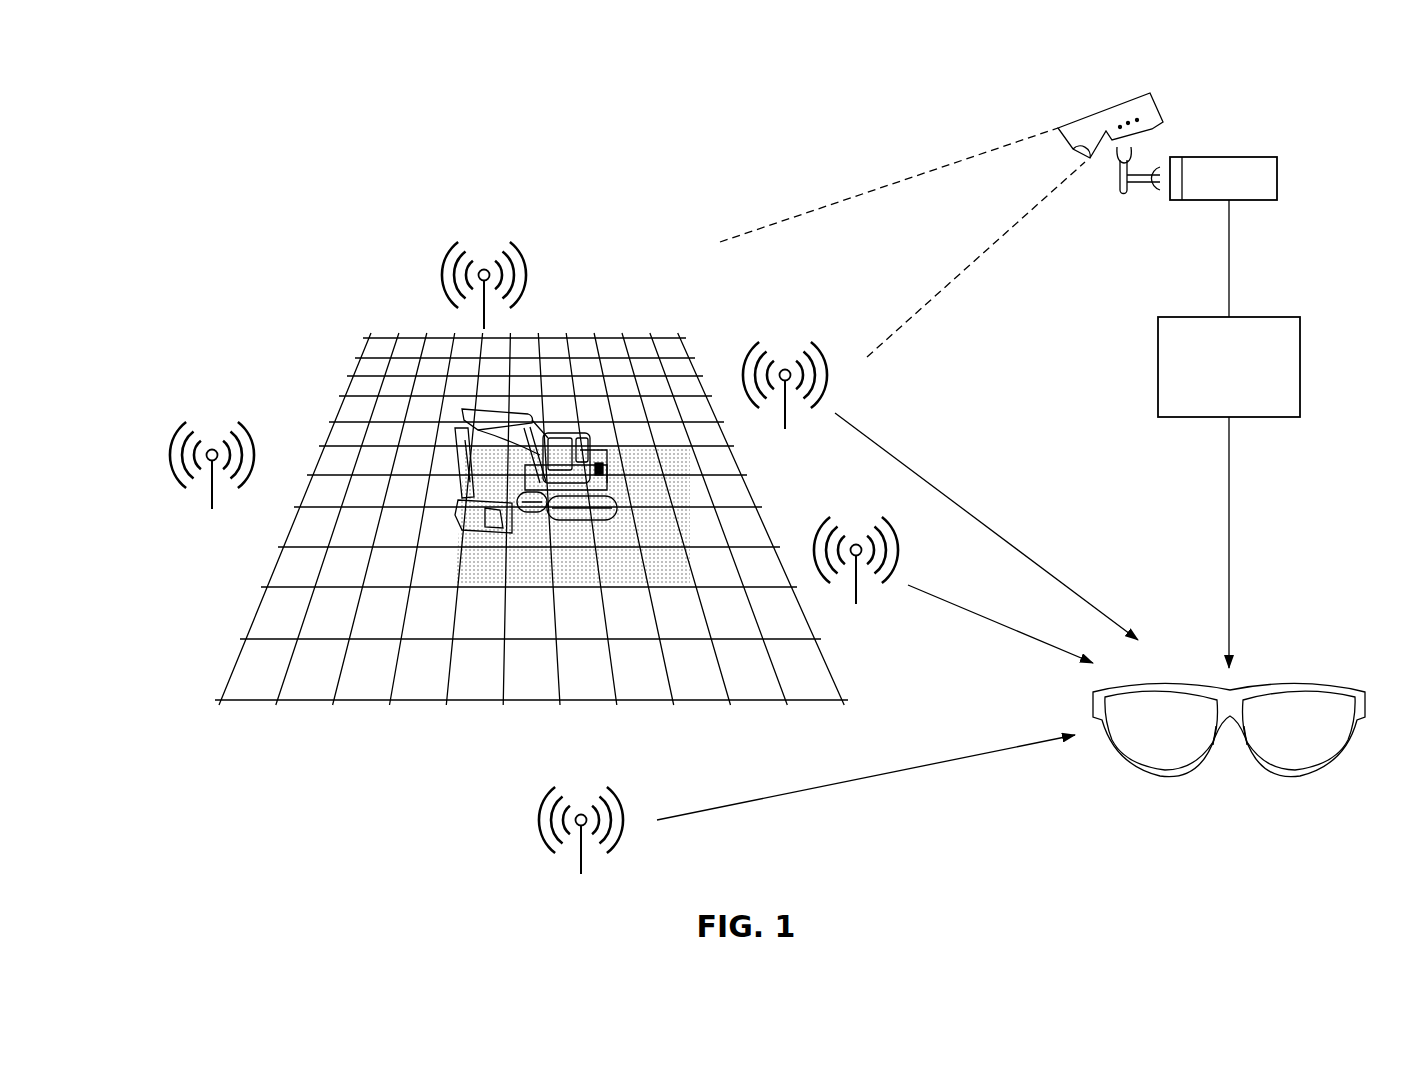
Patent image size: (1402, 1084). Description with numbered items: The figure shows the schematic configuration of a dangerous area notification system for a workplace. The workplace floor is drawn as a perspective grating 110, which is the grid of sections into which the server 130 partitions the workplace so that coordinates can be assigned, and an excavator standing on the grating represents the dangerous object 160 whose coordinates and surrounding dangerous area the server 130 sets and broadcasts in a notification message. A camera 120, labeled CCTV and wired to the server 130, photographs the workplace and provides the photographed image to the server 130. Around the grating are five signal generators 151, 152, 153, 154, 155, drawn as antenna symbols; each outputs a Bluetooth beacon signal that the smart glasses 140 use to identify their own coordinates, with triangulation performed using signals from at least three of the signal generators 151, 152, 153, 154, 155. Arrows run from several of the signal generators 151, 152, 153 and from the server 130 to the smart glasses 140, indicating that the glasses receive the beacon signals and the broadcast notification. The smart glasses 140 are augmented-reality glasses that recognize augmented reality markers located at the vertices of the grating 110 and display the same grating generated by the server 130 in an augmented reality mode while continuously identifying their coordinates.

The work site grid area 110 is at (657, 340).
The camera 120 is at (1150, 93).
The server 130 is at (1253, 316).
The smart glasses 140 is at (1284, 682).
The signal generator 151 is at (785, 368).
The signal generator 152 is at (856, 543).
The signal generator 153 is at (581, 813).
The signal generator 154 is at (212, 448).
The signal generator 155 is at (484, 268).
The dangerous object 160 is at (553, 408).